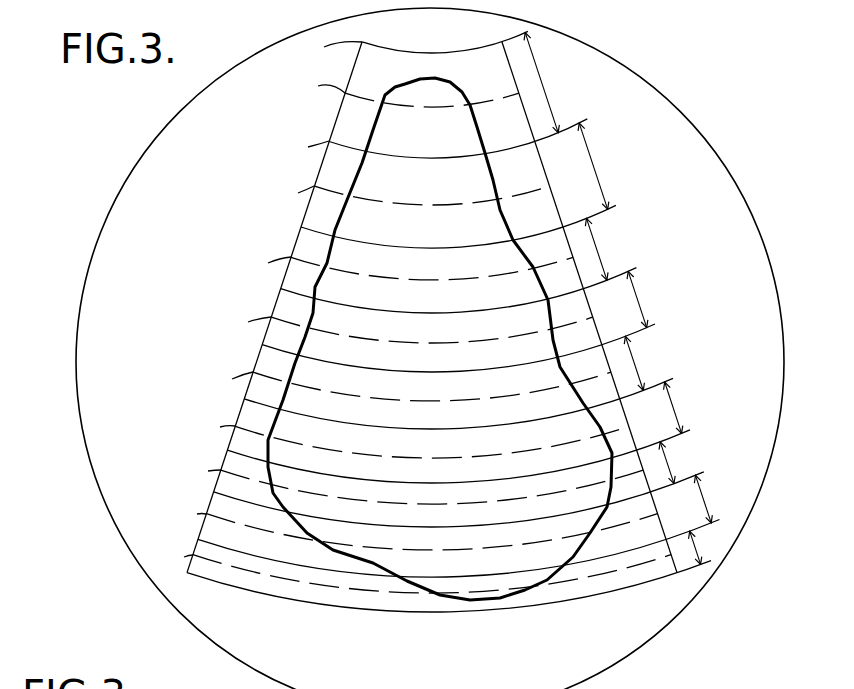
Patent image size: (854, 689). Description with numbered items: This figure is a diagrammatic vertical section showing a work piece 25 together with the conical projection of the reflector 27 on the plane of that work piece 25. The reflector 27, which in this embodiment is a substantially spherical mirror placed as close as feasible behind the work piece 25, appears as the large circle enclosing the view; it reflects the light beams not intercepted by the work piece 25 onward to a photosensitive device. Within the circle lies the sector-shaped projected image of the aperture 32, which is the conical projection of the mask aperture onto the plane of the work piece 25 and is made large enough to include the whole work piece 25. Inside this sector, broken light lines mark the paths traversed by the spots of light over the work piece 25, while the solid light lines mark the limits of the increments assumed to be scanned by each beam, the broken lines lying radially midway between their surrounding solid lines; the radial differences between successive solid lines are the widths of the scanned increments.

The reflector 27 is at (77, 361).
The projected image of the aperture 32 is at (407, 51).
The work piece 25 is at (575, 561).